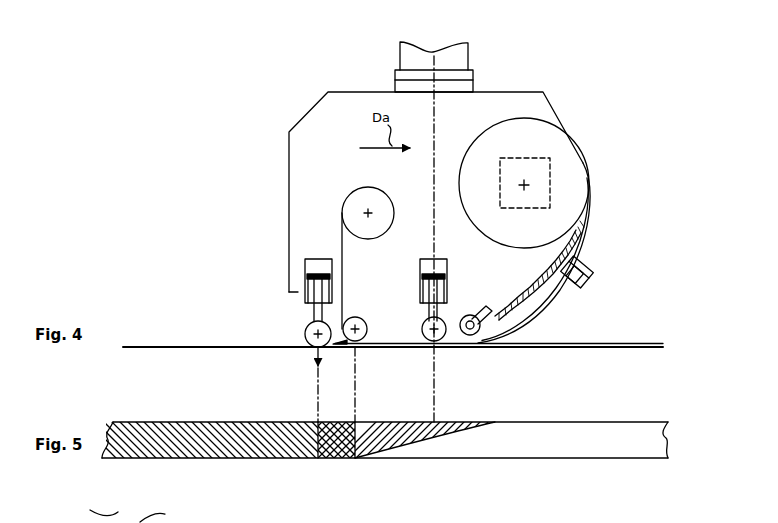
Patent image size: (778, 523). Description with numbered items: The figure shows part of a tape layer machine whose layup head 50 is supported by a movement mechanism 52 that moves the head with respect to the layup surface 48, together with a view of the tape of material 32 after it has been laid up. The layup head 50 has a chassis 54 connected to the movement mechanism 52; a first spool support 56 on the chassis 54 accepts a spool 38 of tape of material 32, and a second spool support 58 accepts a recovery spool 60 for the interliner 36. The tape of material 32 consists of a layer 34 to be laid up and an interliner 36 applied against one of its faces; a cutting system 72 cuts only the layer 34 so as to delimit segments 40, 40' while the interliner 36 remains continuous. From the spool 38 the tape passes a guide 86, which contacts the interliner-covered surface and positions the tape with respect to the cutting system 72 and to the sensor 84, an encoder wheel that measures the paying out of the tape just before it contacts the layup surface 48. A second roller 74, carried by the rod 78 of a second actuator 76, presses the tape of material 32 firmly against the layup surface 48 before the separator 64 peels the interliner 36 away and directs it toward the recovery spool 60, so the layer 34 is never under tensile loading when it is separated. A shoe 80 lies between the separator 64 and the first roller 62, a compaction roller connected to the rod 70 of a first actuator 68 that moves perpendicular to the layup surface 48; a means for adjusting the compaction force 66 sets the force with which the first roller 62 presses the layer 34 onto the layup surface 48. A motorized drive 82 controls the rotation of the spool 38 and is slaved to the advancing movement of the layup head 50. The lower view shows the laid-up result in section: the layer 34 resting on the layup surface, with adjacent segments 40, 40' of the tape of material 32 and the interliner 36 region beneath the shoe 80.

In FIG. 4, the tape of material 32 is at (590, 228).
In FIG. 5, the tape of material 32 is at (590, 420).
In FIG. 4, the layer to be laid up 34 is at (212, 347).
In FIG. 5, the layer to be laid up 34 is at (207, 422).
In FIG. 4, the interliner 36 is at (343, 262).
In FIG. 5, the interliner 36 is at (520, 449).
In FIG. 4, the spool 38 is at (553, 128).
In FIG. 5, the segment to be laid up 40 is at (255, 481).
In FIG. 5, the segment to be laid up 40' is at (642, 469).
In FIG. 4, the layup surface 48 is at (630, 347).
In FIG. 4, the layup head 50 is at (218, 162).
In FIG. 4, the movement mechanism 52 is at (392, 45).
In FIG. 4, the chassis 54 is at (515, 91).
In FIG. 4, the first spool support 56 is at (527, 185).
In FIG. 4, the second spool support 58 is at (366, 213).
In FIG. 4, the recovery spool 60 is at (367, 210).
In FIG. 4, the first roller 62 is at (299, 331).
In FIG. 4, the separator 64 is at (365, 318).
In FIG. 4, the means for adjusting the compaction force 66 is at (315, 358).
In FIG. 4, the first actuator 68 is at (301, 268).
In FIG. 4, the rod 70 is at (304, 309).
In FIG. 4, the cutting system 72 is at (571, 290).
In FIG. 4, the second roller 74 is at (459, 313).
In FIG. 4, the second actuator 76 is at (455, 262).
In FIG. 4, the rod 78 is at (426, 307).
In FIG. 4, the shoe 80 is at (343, 352).
In FIG. 5, the shoe 80 is at (338, 440).
In FIG. 4, the motorized drive 82 is at (553, 160).
In FIG. 4, the sensor 84 is at (481, 338).
In FIG. 4, the guide 86 is at (533, 306).